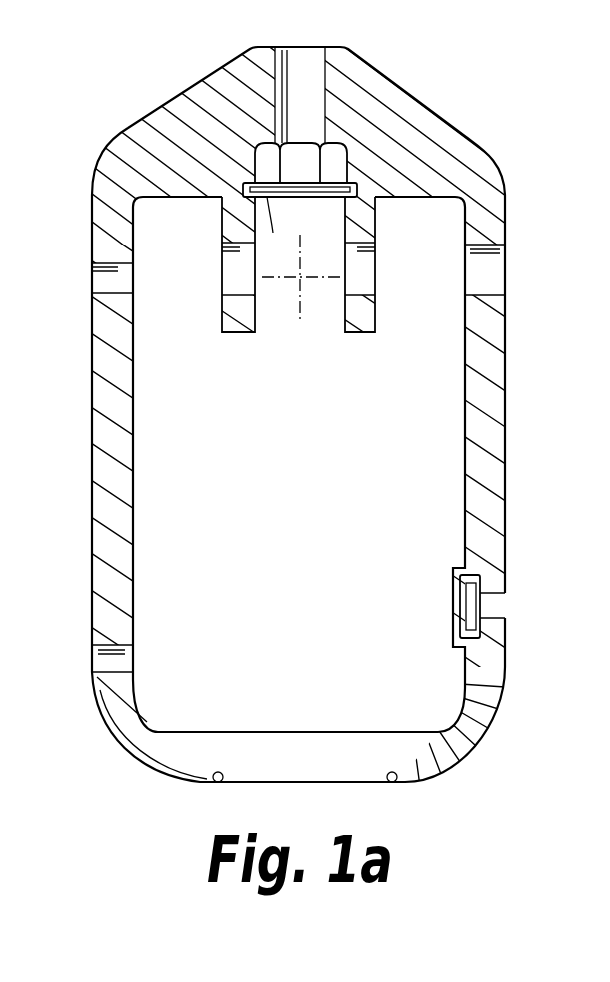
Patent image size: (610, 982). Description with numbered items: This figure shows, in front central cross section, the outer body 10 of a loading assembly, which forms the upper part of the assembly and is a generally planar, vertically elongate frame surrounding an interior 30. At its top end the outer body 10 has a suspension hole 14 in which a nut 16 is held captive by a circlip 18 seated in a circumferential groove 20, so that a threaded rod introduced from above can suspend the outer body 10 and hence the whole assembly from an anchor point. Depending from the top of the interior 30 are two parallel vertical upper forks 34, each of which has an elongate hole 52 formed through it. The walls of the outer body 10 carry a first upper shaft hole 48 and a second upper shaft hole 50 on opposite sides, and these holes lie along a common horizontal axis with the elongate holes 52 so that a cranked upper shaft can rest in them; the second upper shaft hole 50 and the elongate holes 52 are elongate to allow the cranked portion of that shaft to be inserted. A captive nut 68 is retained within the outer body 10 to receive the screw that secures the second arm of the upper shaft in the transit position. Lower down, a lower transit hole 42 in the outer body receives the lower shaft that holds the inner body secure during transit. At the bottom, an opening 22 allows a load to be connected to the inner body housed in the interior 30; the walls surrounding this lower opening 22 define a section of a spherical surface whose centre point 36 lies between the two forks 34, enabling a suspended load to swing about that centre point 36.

The outer body 10 is at (302, 784).
The suspension hole 14 is at (284, 87).
The nut 16 is at (312, 142).
The circlip 18 is at (320, 197).
The circumferential groove 20 is at (340, 197).
The opening 22 is at (405, 782).
The interior 30 is at (407, 445).
The upper forks 34 is at (378, 318).
The centre point 36 is at (305, 290).
The lower transit hole 42 is at (127, 666).
The first upper shaft hole 48 is at (92, 268).
The second upper shaft hole 50 is at (506, 248).
The elongate hole 52 is at (376, 251).
The captive nut 68 is at (483, 607).